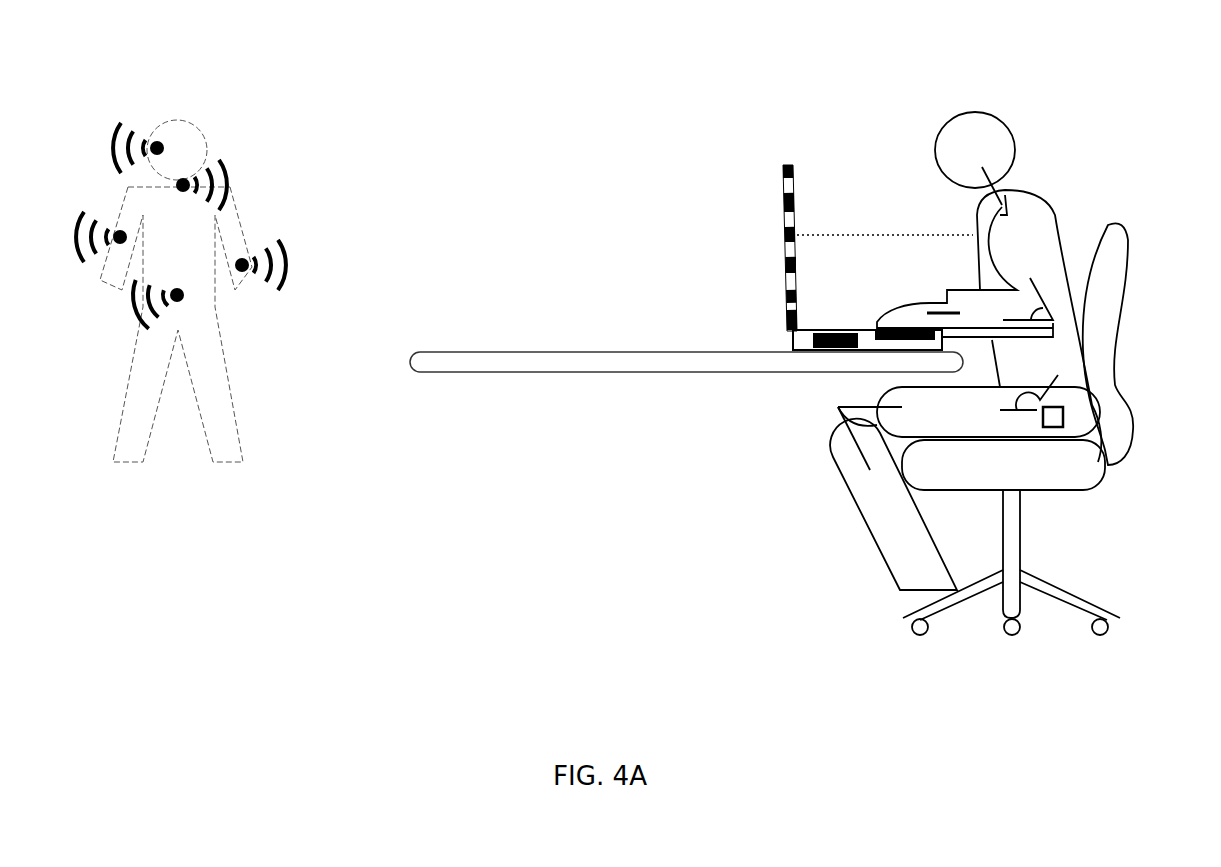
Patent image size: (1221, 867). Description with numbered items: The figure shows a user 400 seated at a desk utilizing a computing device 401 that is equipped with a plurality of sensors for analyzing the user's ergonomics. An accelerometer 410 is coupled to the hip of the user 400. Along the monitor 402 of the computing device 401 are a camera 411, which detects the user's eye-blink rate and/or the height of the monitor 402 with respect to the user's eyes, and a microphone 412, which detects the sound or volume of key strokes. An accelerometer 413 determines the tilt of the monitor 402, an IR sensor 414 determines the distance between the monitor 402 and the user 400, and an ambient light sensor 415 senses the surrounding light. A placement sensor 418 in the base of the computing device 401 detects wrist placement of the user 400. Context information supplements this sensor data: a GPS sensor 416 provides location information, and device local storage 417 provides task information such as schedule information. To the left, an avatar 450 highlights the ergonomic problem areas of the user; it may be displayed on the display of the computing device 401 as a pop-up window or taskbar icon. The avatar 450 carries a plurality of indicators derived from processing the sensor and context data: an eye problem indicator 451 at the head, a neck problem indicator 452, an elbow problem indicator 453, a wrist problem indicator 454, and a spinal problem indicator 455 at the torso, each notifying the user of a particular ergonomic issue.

The user 400 is at (1050, 205).
The computing device 401 is at (875, 328).
The monitor 402 is at (800, 222).
The accelerometer 410 is at (1148, 515).
The camera 411 is at (792, 167).
The microphone 412 is at (838, 143).
The accelerometer 413 is at (785, 202).
The IR sensor 414 is at (785, 233).
The ambient light sensor 415 is at (786, 278).
The GPS sensor 416 is at (787, 318).
The device local storage 417 is at (812, 334).
The placement sensor 418 is at (875, 332).
The avatar 450 is at (176, 323).
The eye problem indicator 451 is at (157, 148).
The neck problem indicator 452 is at (183, 185).
The elbow problem indicator 453 is at (120, 237).
The wrist problem indicator 454 is at (242, 265).
The spinal problem indicator 455 is at (177, 295).